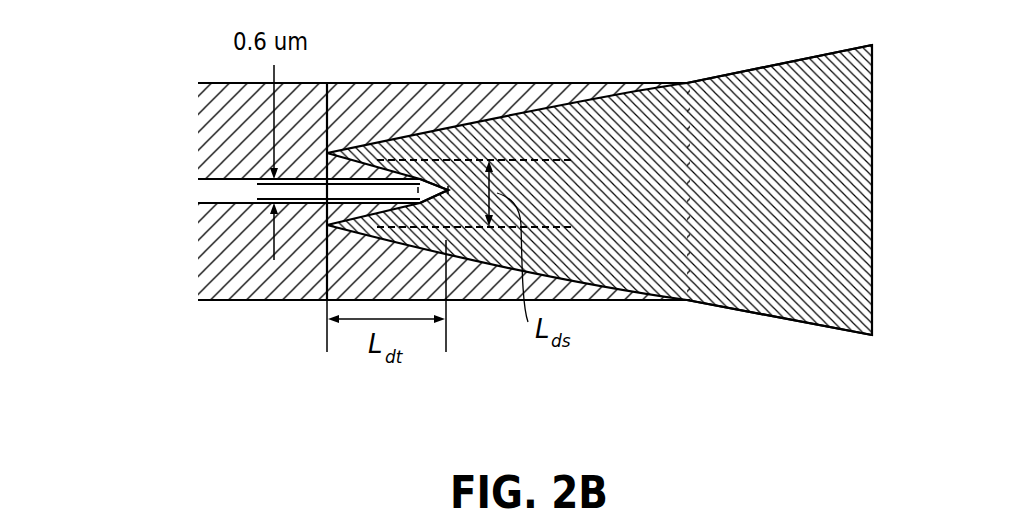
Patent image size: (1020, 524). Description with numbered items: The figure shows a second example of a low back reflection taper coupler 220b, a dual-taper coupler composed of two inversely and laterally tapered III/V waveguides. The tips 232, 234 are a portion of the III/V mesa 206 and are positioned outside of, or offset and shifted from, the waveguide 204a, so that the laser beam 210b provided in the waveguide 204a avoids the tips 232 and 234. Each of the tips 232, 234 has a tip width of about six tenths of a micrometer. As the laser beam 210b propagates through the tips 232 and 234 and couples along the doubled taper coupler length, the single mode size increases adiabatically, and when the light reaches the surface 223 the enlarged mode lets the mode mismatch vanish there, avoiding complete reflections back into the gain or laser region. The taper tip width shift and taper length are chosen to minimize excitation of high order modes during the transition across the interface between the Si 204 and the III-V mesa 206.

The Si 204 is at (223, 268).
The waveguide 204a is at (208, 192).
The III/V Mesa 206 is at (787, 285).
The laser beam 210b is at (170, 193).
The low back reflection taper coupler 220b is at (533, 55).
The surface 223 is at (457, 212).
The tip 232 is at (328, 122).
The tip 234 is at (326, 224).